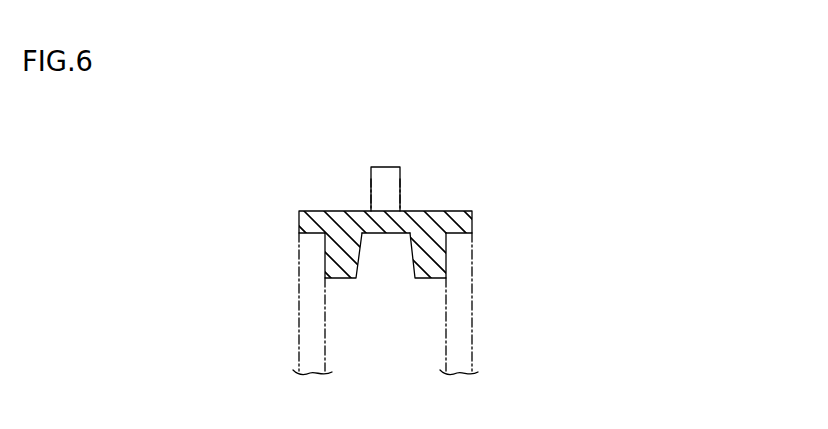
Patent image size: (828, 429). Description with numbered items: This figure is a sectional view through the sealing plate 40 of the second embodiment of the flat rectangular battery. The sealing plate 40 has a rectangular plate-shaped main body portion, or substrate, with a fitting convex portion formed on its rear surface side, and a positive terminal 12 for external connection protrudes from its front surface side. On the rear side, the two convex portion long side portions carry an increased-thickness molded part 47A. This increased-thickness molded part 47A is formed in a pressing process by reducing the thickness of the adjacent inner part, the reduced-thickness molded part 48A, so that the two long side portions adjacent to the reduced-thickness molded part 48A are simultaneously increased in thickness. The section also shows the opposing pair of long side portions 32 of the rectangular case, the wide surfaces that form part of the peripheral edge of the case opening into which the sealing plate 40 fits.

The positive terminal 12 is at (383, 166).
The sealing plate 40 is at (435, 210).
The increased-thickness molded part 47A is at (343, 282).
The reduced-thickness molded part 48A is at (372, 232).
The long side portions 32 is at (298, 352).